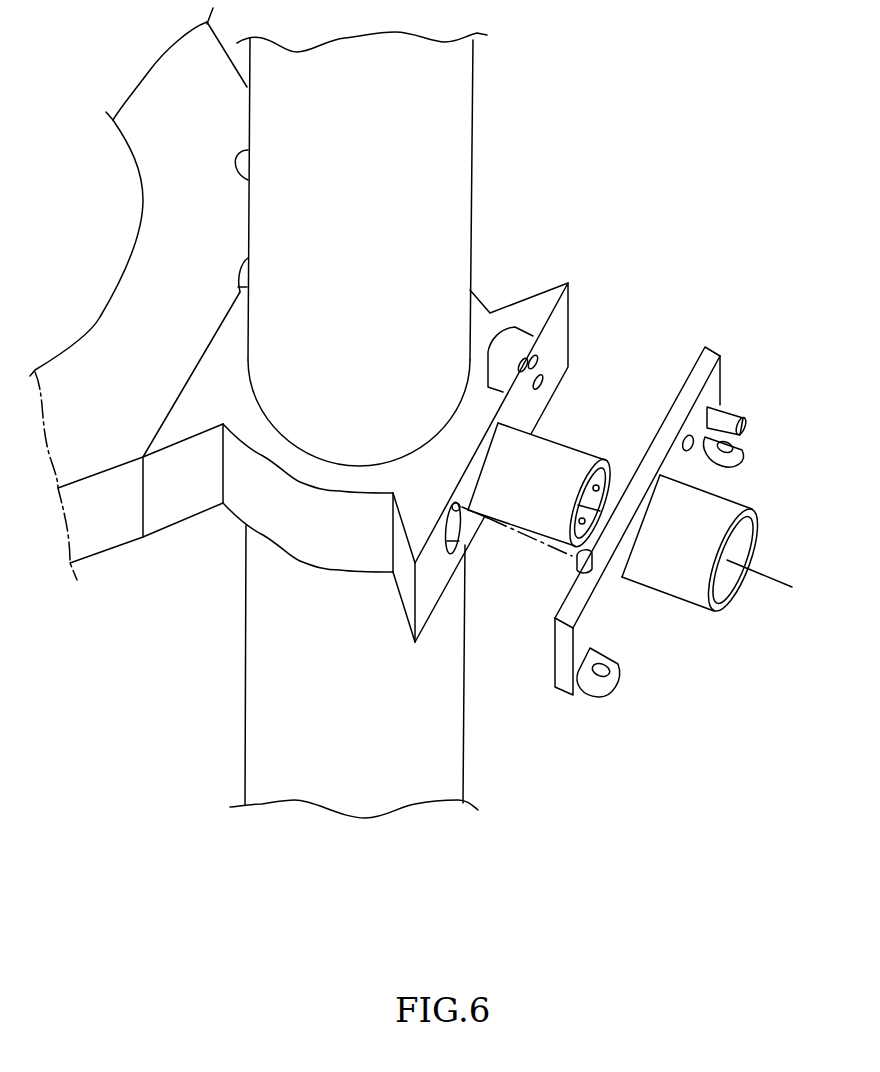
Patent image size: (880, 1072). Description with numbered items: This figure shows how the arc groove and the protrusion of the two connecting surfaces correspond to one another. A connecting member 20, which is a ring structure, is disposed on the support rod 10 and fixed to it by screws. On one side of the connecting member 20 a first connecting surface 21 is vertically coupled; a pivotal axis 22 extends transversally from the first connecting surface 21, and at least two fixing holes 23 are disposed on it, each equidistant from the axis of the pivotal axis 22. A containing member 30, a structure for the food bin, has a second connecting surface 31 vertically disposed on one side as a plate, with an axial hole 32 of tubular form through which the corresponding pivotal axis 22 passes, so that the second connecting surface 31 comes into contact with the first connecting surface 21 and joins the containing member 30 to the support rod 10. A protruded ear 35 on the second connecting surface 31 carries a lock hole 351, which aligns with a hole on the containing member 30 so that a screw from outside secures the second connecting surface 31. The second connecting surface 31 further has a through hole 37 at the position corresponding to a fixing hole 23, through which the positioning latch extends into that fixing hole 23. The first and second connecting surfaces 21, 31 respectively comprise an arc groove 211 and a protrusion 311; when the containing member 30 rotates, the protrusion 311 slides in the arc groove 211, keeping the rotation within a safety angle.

The support rod 10 is at (265, 690).
The connecting member 20 is at (245, 508).
The first connecting surface 21 is at (163, 423).
The arc groove 211 is at (453, 547).
The pivotal axis 22 is at (557, 448).
The fixing holes 23 is at (523, 357).
The containing member 30 is at (147, 256).
The second connecting surface 31 is at (188, 382).
The protrusion 311 is at (577, 574).
The axial hole 32 is at (653, 573).
The protruded ear 35 is at (737, 462).
The lock hole 351 is at (735, 445).
The through hole 37 is at (687, 436).